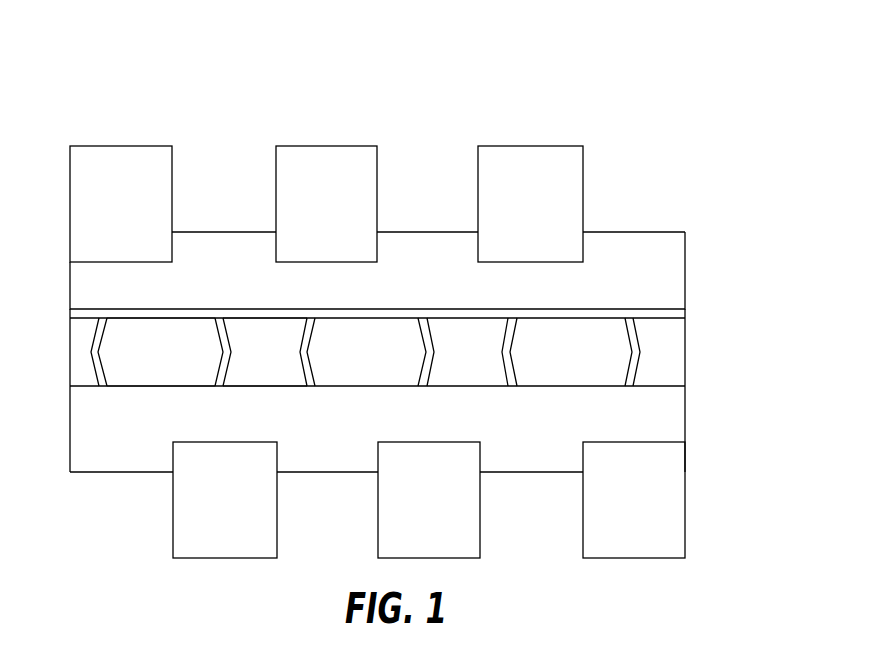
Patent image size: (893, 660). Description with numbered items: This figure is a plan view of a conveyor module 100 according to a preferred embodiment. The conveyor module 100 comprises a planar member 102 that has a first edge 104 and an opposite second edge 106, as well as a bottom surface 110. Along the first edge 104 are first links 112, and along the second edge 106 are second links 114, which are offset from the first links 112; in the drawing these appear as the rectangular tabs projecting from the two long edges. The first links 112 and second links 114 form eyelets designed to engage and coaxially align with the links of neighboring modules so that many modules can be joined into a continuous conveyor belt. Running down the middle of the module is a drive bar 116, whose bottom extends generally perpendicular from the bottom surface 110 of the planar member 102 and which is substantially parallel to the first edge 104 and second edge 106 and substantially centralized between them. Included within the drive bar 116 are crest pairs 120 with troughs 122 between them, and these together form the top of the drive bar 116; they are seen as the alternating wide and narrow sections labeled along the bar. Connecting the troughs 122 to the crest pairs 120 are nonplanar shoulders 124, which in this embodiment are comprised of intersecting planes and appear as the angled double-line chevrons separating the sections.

The conveyor module 100 is at (704, 170).
The planar member 102 is at (686, 268).
The first edge 104 is at (427, 230).
The second edge 106 is at (529, 474).
The bottom surface 110 is at (650, 427).
The first links 112 is at (357, 146).
The second links 114 is at (686, 545).
The drive bar 116 is at (685, 340).
The crest pairs 120 is at (173, 366).
The troughs 122 is at (280, 366).
The nonplanar shoulders 124 is at (95, 360).